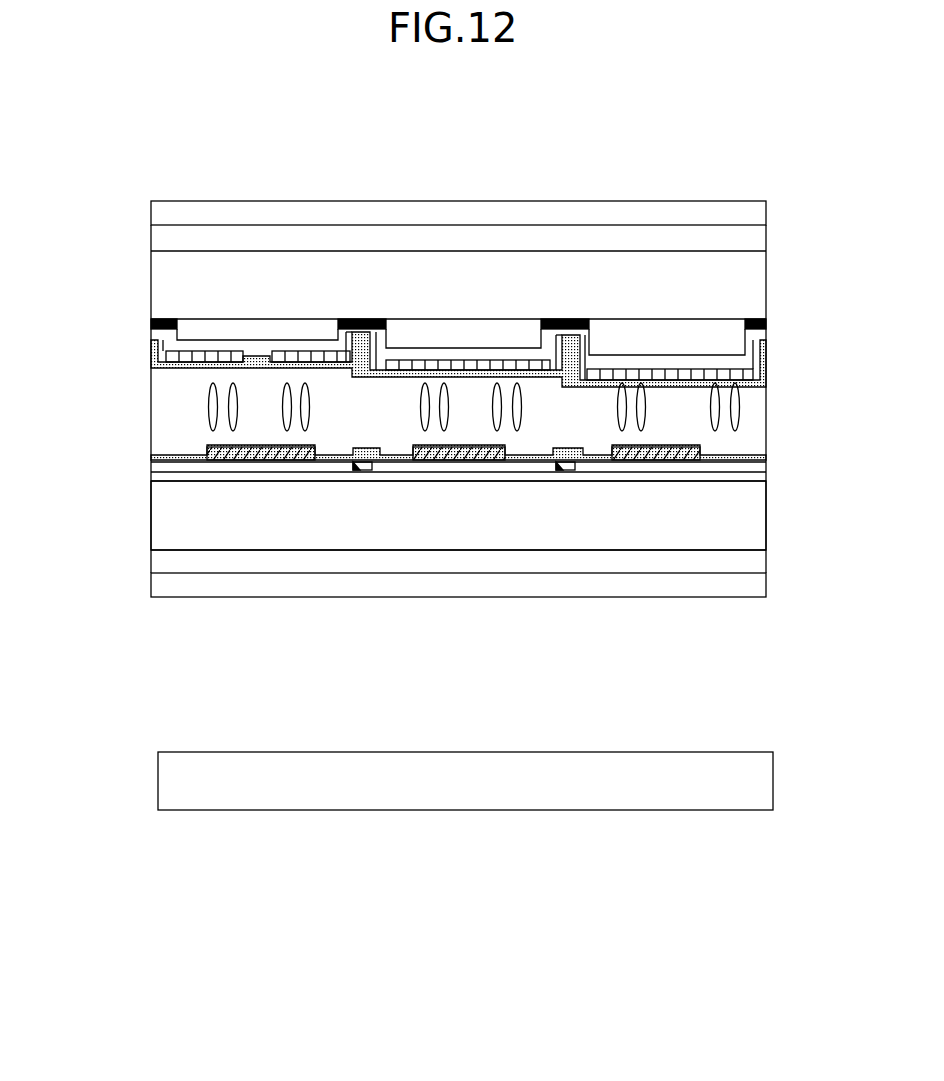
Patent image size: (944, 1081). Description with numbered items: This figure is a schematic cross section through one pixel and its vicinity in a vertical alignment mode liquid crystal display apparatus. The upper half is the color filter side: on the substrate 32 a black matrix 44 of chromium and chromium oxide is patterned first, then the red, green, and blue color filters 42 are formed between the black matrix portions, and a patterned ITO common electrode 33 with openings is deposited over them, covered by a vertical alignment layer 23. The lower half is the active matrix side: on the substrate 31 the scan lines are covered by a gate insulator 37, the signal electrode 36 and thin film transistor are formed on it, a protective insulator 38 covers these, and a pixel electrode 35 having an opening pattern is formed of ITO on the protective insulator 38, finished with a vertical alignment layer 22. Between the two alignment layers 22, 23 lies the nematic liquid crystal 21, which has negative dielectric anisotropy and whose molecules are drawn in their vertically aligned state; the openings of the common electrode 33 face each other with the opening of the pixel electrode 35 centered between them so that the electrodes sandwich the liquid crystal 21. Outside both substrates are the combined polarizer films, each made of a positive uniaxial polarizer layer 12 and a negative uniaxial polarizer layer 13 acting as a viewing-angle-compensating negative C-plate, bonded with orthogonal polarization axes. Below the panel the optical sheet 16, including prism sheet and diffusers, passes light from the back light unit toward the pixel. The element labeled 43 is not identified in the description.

The polarizer layer 12 is at (520, 210).
The polarizer layer 13 is at (556, 234).
The optical sheet 16 is at (215, 790).
The liquid crystal 21 is at (747, 420).
The vertical alignment layer 22 is at (207, 445).
The vertical alignment layer 23 is at (150, 362).
The substrate 31 is at (287, 502).
The substrate 32 is at (472, 270).
The common electrode 33 is at (197, 362).
The pixel electrode 35 is at (462, 455).
The signal electrode 36 is at (357, 472).
The gate insulator 37 is at (168, 462).
The protective insulator 38 is at (747, 455).
The color filter 42 is at (693, 333).
The overcoat layer 43 is at (722, 367).
The black matrix 44 is at (370, 318).